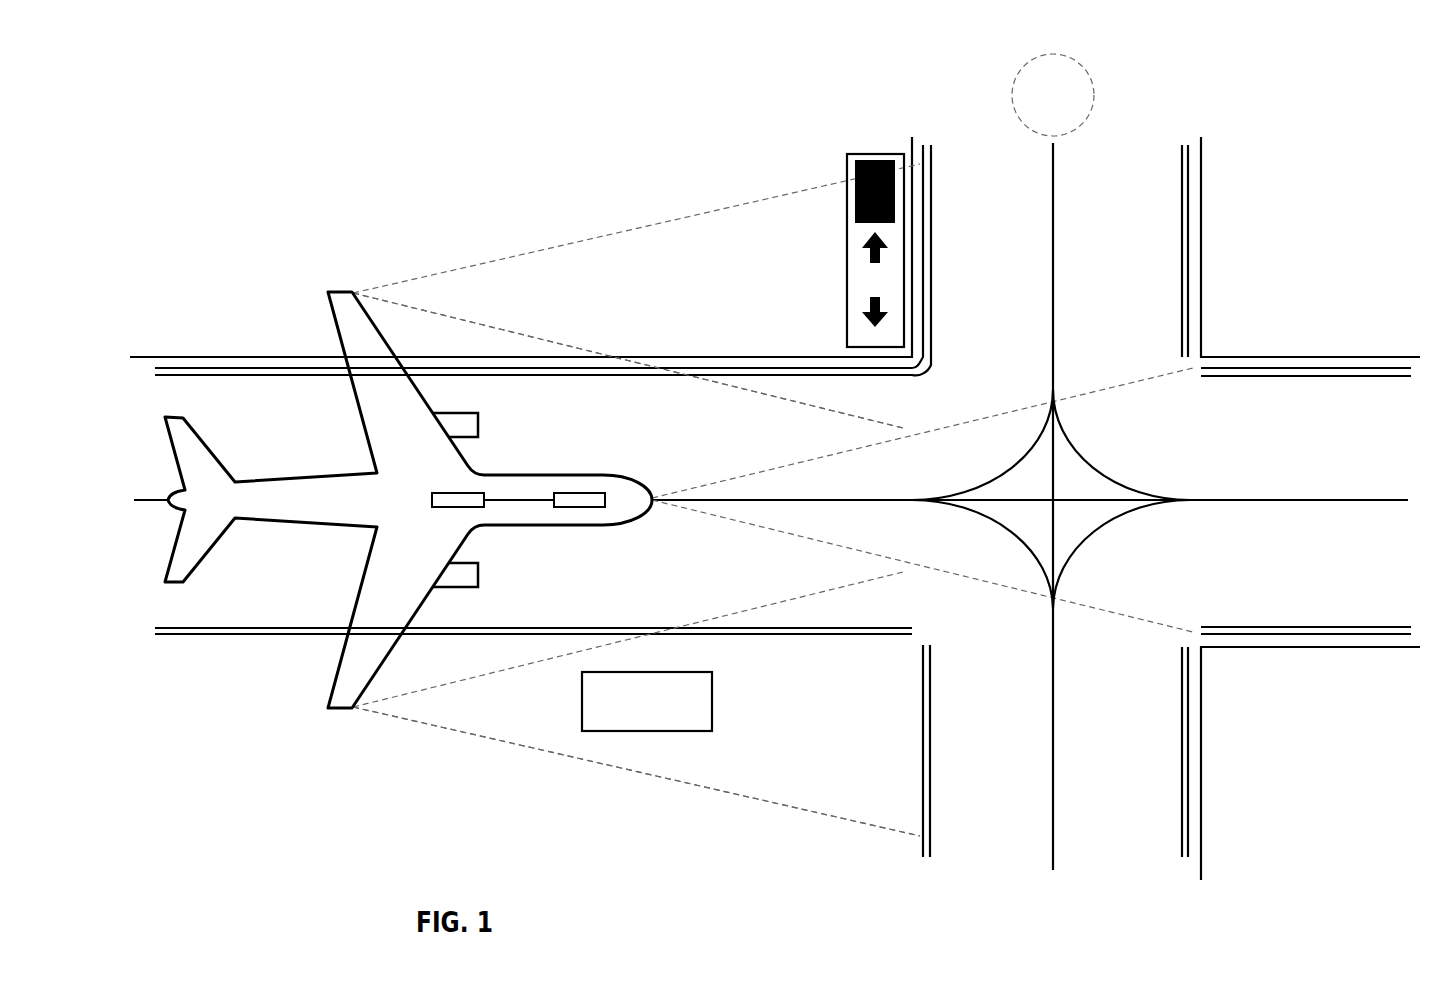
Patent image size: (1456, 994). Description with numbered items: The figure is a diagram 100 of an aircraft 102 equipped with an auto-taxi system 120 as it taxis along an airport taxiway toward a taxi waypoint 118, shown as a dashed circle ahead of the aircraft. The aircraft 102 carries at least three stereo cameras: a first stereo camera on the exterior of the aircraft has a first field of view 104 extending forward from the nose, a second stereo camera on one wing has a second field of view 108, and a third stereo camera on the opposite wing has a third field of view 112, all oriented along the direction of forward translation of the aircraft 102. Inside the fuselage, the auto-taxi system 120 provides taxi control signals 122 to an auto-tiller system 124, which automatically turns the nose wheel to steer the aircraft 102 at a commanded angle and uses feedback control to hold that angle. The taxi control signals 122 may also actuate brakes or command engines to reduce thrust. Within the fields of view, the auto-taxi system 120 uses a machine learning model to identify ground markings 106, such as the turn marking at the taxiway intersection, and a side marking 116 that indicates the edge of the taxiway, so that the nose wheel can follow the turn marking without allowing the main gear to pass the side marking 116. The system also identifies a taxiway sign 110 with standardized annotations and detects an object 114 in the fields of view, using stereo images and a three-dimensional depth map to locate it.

The diagram 100 is at (1364, 77).
The aircraft 102 is at (513, 473).
The first field of view 104 is at (792, 531).
The ground markings 106 is at (992, 482).
The second field of view 108 is at (483, 330).
The taxiway sign 110 is at (848, 284).
The third field of view 112 is at (713, 792).
The object 114 is at (712, 705).
The side marking 116 is at (920, 370).
The taxi waypoint 118 is at (1090, 73).
The auto-taxi system 120 is at (458, 493).
The taxi control signals 122 is at (503, 500).
The auto-tiller system 124 is at (590, 507).